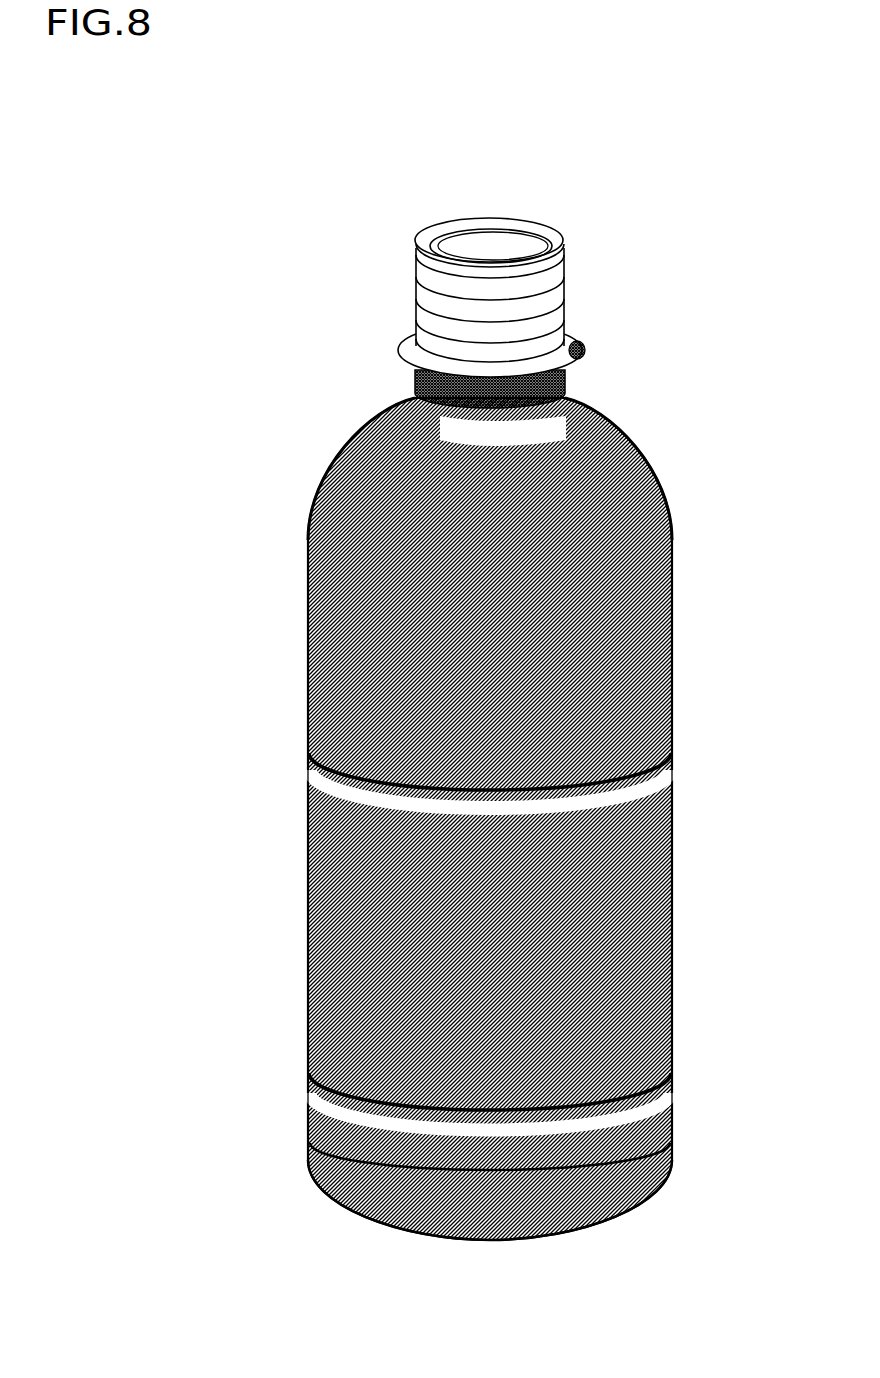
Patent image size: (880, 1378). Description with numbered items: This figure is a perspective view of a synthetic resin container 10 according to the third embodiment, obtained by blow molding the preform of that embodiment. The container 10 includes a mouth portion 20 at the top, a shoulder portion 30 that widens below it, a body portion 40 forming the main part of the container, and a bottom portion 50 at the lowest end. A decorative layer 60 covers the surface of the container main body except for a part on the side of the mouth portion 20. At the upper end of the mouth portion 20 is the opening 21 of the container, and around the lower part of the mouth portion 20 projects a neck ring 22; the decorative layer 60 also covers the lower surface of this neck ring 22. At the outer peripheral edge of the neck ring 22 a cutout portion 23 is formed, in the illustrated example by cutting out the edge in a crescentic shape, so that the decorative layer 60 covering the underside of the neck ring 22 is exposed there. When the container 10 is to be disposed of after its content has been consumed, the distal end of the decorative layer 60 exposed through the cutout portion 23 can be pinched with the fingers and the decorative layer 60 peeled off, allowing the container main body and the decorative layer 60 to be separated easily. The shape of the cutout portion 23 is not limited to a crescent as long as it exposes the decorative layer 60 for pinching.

The container 10 is at (629, 188).
The mouth portion 20 is at (417, 355).
The opening 21 is at (425, 272).
The neck ring 22 is at (418, 345).
The cutout portion 23 is at (581, 348).
The shoulder portion 30 is at (360, 430).
The body portion 40 is at (310, 727).
The bottom portion 50 is at (385, 1227).
The decorative layer 60 is at (582, 353).